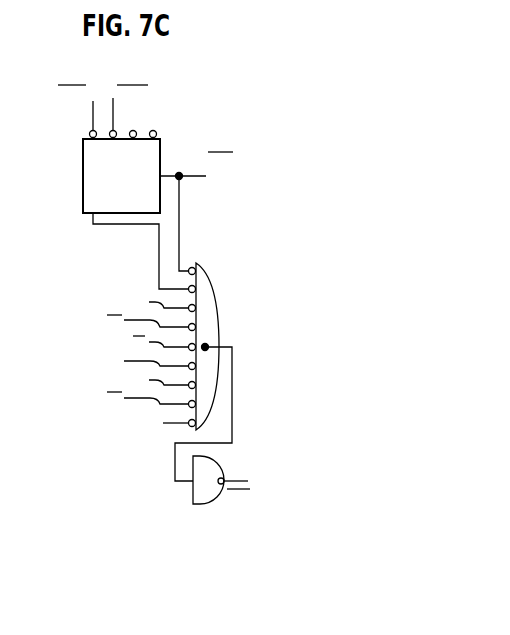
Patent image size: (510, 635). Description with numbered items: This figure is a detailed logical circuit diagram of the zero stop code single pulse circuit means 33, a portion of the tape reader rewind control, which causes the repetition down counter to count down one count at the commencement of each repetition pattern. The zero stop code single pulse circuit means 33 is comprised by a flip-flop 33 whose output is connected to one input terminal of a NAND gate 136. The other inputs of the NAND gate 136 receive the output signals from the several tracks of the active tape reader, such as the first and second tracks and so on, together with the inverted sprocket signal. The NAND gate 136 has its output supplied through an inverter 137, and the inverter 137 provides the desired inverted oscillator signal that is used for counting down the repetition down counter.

The "0" stop code single pulse circuit means 33 is at (83, 168).
The NAND gate 136 is at (221, 276).
The inverter 137 is at (193, 490).